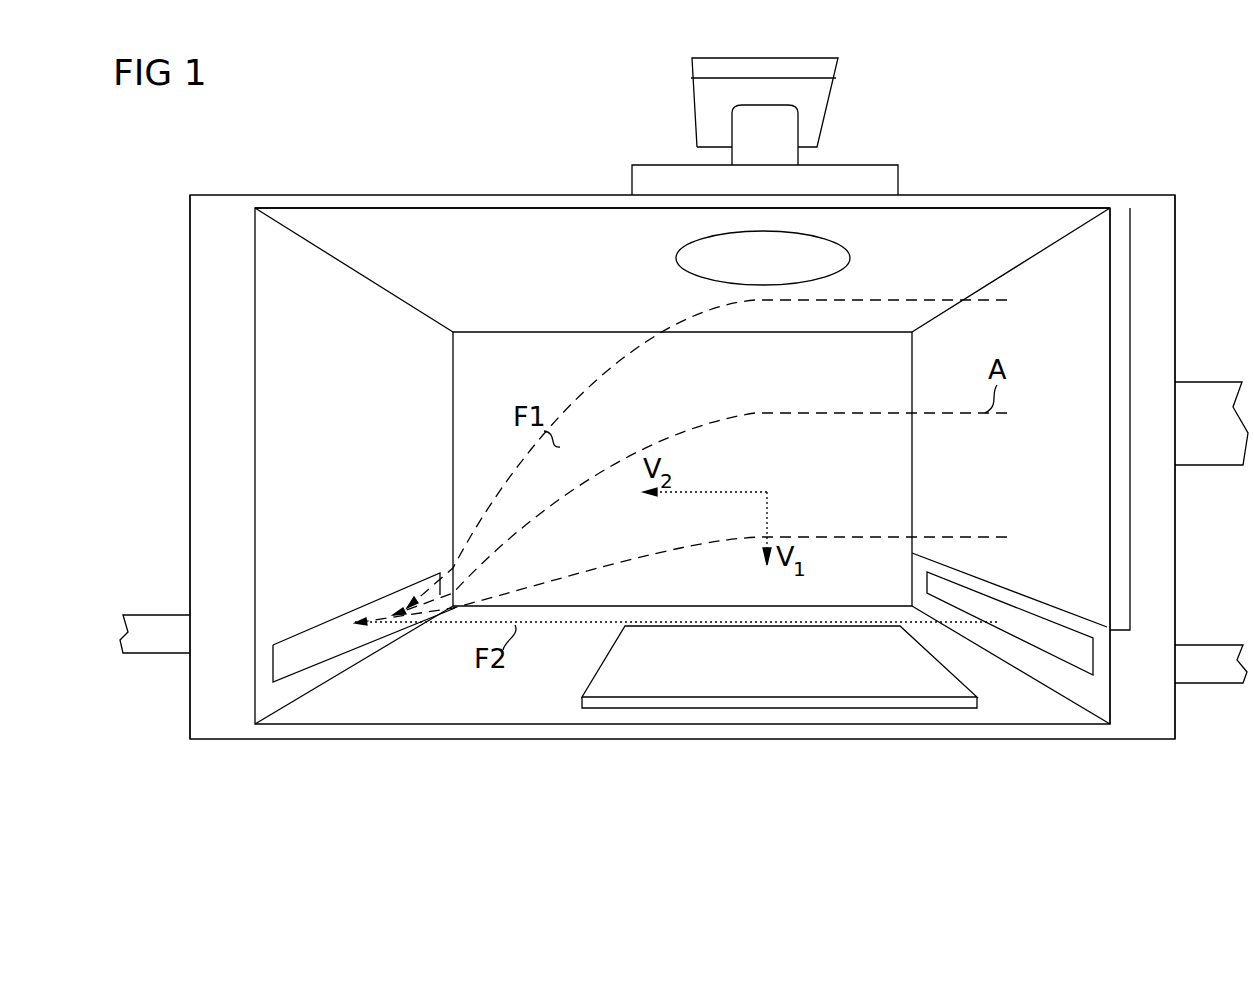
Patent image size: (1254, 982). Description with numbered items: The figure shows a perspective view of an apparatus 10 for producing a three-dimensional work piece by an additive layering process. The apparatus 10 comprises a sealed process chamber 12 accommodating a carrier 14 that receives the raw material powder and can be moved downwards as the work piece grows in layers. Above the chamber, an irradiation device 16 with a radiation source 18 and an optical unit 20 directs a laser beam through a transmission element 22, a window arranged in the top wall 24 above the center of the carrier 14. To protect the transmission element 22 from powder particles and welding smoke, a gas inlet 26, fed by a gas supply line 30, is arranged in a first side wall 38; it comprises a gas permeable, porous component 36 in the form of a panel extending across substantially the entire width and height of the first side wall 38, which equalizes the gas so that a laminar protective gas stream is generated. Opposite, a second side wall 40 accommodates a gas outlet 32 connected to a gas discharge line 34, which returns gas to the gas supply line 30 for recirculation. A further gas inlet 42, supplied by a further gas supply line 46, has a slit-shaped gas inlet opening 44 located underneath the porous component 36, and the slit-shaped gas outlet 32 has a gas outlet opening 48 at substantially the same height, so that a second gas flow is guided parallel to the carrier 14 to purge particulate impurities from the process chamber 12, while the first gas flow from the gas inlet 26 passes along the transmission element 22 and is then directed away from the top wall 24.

The apparatus 10 is at (297, 168).
The process chamber 12 is at (915, 228).
The carrier 14 is at (525, 705).
The irradiation device 16 is at (498, 105).
The radiation source 18 is at (820, 66).
The optical unit 20 is at (777, 127).
The transmission element 22 is at (840, 258).
The top wall 24 is at (983, 230).
The gas inlet 26 is at (1083, 268).
The gas supply line 30 is at (1208, 395).
The gas outlet 32 is at (300, 668).
The gas discharge line 34 is at (158, 625).
The gas permeable, porous component 36 is at (1120, 318).
The first side wall 38 is at (1177, 567).
The second side wall 40 is at (190, 410).
The further gas inlet 42 is at (1087, 678).
The gas inlet opening 44 is at (1077, 650).
The further gas supply line 46 is at (1213, 672).
The gas outlet opening 48 is at (307, 640).